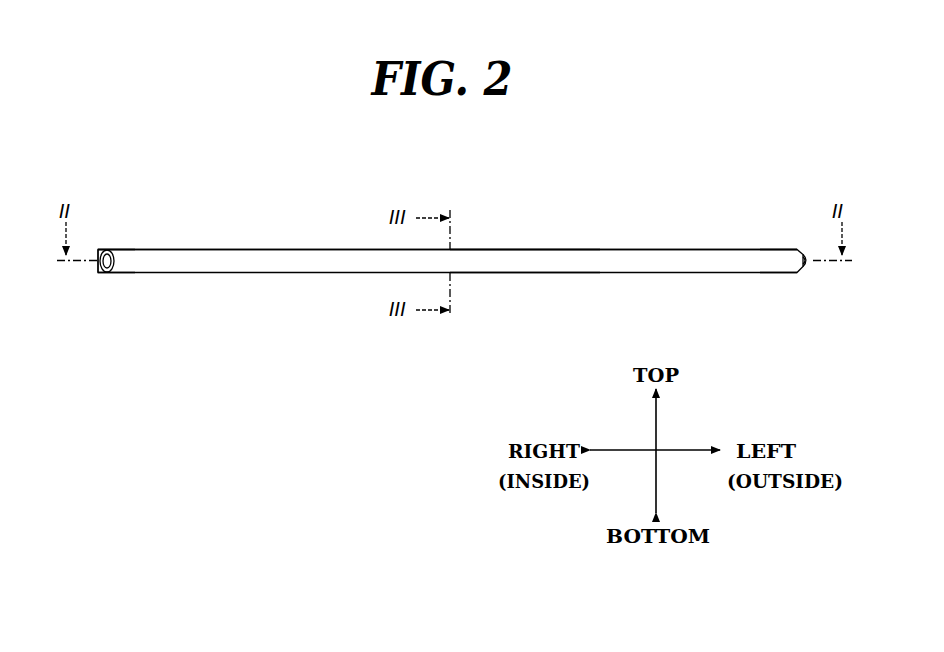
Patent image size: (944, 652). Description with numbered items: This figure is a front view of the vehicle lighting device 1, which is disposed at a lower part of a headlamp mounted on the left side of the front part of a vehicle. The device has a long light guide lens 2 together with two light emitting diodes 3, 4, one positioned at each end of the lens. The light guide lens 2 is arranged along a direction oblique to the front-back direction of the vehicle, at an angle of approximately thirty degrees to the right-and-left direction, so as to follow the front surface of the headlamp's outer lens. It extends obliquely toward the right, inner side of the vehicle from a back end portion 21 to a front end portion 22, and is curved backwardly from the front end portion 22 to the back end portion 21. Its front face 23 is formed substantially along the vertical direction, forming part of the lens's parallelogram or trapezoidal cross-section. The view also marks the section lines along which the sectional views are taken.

The vehicle lighting device 1 is at (419, 180).
The light guide lens 2 is at (608, 241).
The light emitting diode 3 is at (807, 267).
The light emitting diode 4 is at (98, 265).
The back end portion 21 is at (790, 280).
The front end portion 22 is at (117, 281).
The front face 23 is at (535, 265).